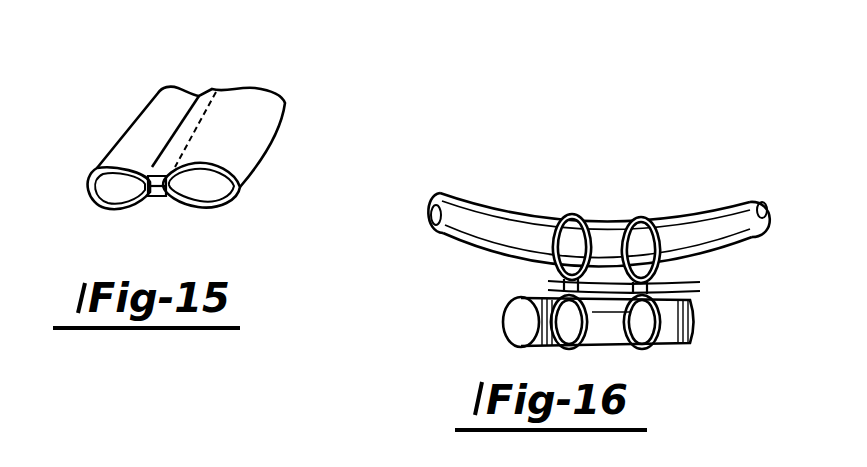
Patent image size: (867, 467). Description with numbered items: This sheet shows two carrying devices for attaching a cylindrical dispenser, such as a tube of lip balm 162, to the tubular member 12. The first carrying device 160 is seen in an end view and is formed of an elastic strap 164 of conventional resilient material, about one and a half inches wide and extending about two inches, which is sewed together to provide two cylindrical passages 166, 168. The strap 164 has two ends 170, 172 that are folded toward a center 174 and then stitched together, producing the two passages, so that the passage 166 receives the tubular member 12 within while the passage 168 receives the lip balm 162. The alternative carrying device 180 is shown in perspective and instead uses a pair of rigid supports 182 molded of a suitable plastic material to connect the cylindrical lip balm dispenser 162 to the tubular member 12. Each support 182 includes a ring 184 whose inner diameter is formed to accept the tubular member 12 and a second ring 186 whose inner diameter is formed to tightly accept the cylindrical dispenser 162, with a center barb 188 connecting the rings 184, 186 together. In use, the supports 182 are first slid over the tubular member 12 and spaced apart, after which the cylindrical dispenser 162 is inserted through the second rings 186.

In FIG. 16, the tubular member 12 is at (693, 210).
In FIG. 15, the carrying device 160 is at (219, 141).
In FIG. 16, the lip balm 162 is at (696, 313).
In FIG. 15, the elastic strap 164 is at (253, 100).
In FIG. 15, the cylindrical passage 166 is at (242, 197).
In FIG. 15, the cylindrical passage 168 is at (108, 192).
In FIG. 15, the strap end 170 is at (192, 112).
In FIG. 15, the strap end 172 is at (172, 197).
In FIG. 15, the center 174 is at (153, 193).
In FIG. 16, the alternative carrying device 180 is at (579, 324).
In FIG. 16, the rigid support 182 is at (617, 267).
In FIG. 16, the ring 184 is at (632, 215).
In FIG. 16, the second ring 186 is at (582, 351).
In FIG. 16, the center barb 188 is at (550, 286).